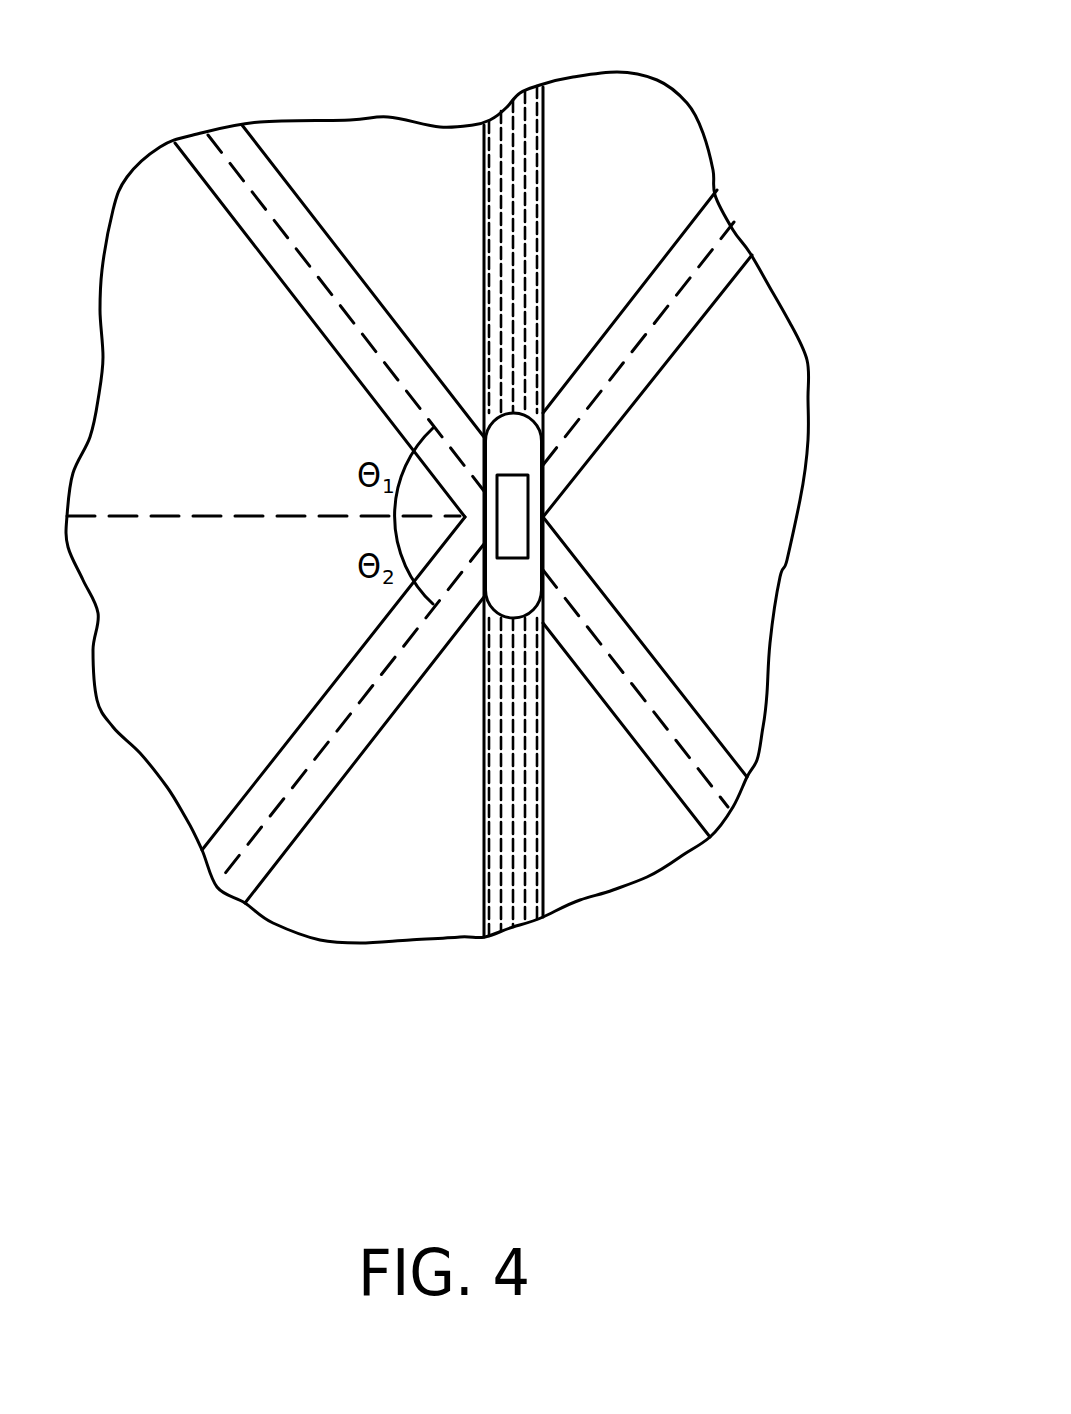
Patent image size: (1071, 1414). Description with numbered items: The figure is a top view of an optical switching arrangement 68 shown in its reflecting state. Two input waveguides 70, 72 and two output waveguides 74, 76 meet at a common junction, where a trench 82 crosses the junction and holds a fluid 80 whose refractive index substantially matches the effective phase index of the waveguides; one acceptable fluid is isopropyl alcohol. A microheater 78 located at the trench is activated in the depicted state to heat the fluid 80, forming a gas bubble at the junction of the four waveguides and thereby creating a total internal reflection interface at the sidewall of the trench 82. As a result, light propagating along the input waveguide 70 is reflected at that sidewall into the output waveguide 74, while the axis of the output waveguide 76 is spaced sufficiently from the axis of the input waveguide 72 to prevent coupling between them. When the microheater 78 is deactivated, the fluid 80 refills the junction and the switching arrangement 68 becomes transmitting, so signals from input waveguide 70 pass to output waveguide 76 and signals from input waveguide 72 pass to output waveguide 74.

The switching arrangement 68 is at (789, 48).
The input waveguide 70 is at (287, 290).
The input waveguide 72 is at (662, 368).
The output waveguide 74 is at (282, 747).
The output waveguide 76 is at (677, 690).
The microheater 78 is at (513, 537).
The fluid 80 is at (523, 833).
The trench 82 is at (523, 585).